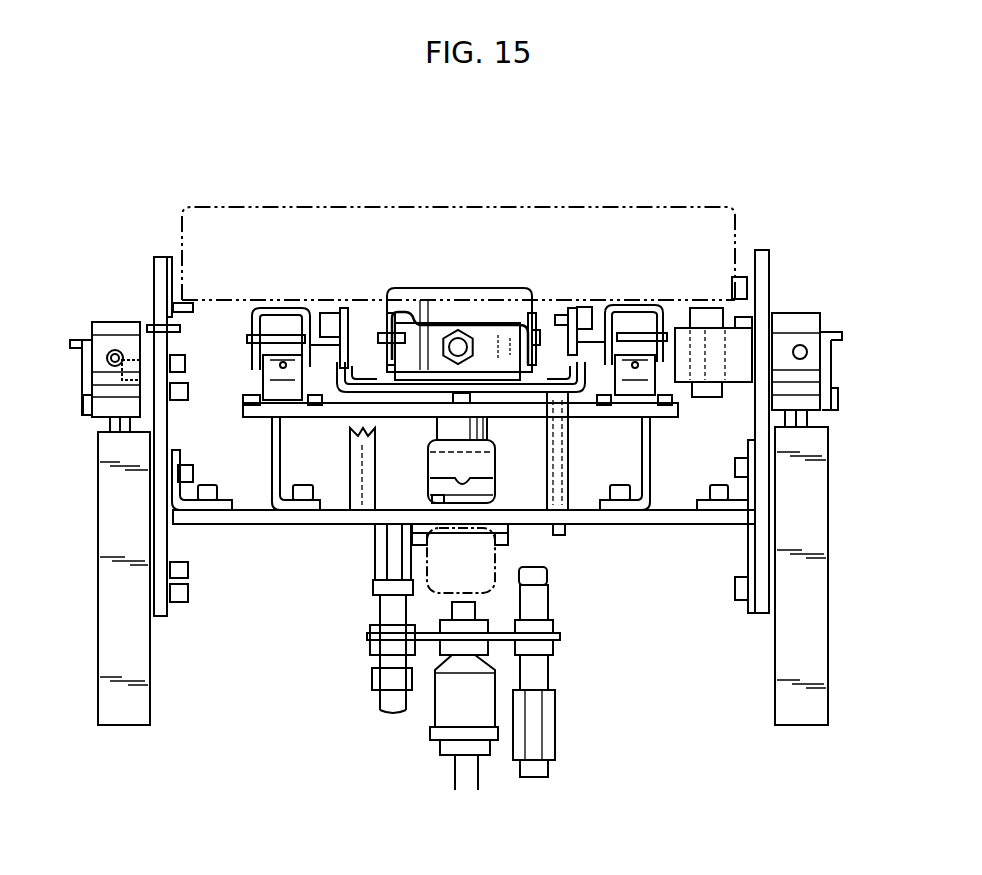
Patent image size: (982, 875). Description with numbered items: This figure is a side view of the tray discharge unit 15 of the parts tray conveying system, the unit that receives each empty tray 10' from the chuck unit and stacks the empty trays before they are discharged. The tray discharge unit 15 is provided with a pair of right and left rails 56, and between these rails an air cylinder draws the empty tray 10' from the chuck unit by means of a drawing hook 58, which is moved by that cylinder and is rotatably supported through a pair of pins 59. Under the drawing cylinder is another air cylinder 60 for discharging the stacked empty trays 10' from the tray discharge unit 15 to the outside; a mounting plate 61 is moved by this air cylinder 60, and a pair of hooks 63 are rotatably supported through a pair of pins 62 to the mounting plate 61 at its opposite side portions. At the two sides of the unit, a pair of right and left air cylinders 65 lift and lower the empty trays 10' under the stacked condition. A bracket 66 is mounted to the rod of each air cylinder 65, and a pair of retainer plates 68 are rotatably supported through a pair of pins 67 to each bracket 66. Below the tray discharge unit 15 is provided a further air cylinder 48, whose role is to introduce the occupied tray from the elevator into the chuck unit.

The empty tray 10' is at (458, 217).
The tray discharge unit 15 is at (625, 170).
The air cylinder 48 is at (498, 553).
The rails 56 is at (153, 277).
The drawing hook 58 is at (458, 292).
The pins 59 is at (380, 335).
The air cylinder 60 is at (488, 457).
The mounting plate 61 is at (397, 410).
The pins 62 is at (247, 335).
The hooks 63 is at (288, 306).
The air cylinders 65 is at (103, 618).
The bracket 66 is at (105, 421).
The pins 67 is at (110, 357).
The retainer plates 68 is at (187, 315).